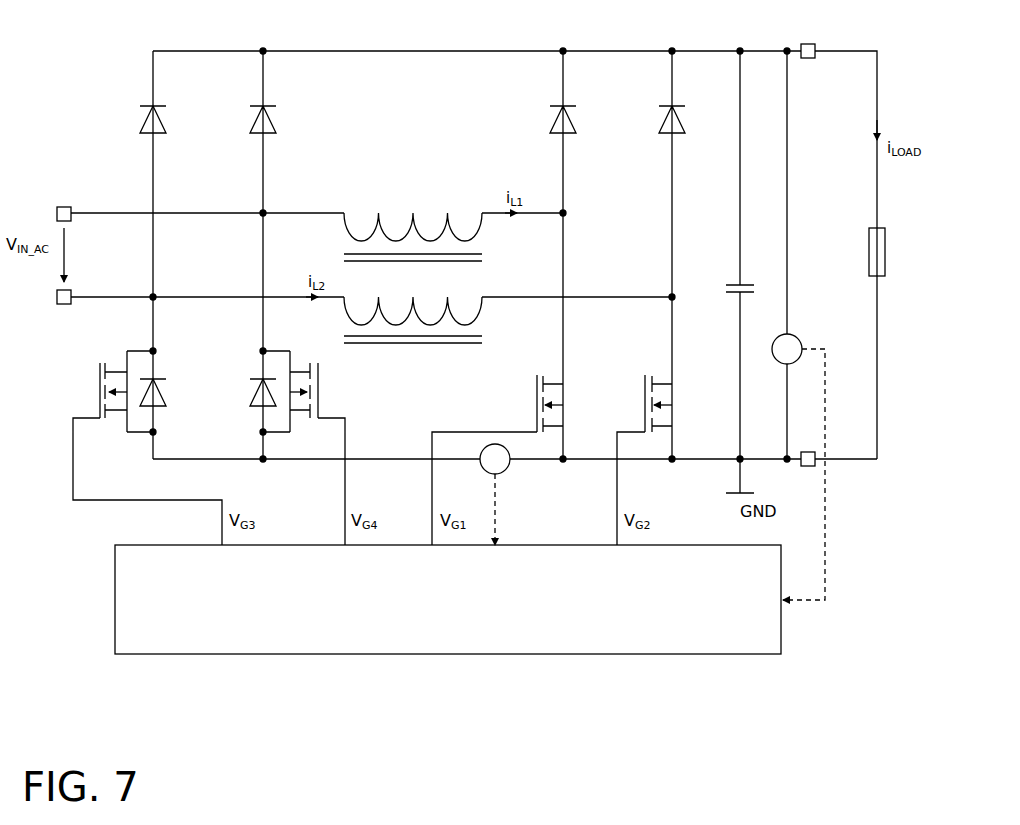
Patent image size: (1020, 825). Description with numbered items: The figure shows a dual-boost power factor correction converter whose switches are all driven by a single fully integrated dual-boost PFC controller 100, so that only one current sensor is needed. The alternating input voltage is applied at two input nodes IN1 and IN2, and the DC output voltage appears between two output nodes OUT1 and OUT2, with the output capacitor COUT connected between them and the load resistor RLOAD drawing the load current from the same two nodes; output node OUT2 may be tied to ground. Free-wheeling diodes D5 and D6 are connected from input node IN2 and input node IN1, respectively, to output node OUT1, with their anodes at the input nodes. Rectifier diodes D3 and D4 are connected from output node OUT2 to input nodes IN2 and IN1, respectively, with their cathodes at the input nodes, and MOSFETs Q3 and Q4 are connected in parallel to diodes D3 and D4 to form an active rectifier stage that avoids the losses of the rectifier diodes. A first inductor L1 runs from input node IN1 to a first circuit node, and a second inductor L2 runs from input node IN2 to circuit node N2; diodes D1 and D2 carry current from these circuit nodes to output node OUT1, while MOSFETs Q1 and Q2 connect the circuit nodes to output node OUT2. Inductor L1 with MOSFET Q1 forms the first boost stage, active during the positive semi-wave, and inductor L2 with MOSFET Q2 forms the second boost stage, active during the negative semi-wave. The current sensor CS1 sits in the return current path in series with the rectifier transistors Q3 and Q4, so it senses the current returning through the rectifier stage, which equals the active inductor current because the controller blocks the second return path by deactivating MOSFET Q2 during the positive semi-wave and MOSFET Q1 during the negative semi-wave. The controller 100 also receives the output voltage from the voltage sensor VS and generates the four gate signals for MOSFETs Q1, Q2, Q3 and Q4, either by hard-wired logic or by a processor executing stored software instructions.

The integrated dual-boost PFC controller 100 is at (562, 654).
The diode D1 is at (555, 255).
The diode D2 is at (664, 255).
The rectifier diode D3 is at (166, 391).
The rectifier diode D4 is at (249, 391).
The free-wheeling diode D5 is at (167, 109).
The free-wheeling diode D6 is at (277, 255).
The first inductor L1 is at (398, 237).
The second inductor L2 is at (424, 320).
The MOSFET Q1 is at (497, 455).
The MOSFET Q2 is at (643, 455).
The MOSFET Q3 is at (147, 448).
The MOSFET Q4 is at (304, 448).
The input node IN1 is at (266, 211).
The input node IN2 is at (156, 295).
The circuit node N2 is at (561, 211).
The output node OUT1 is at (742, 50).
The output node OUT2 is at (739, 458).
The current sensor CS1 is at (507, 469).
The voltage sensor VS is at (790, 334).
The output capacitor COUT is at (751, 272).
The load resistor RLOAD is at (851, 198).